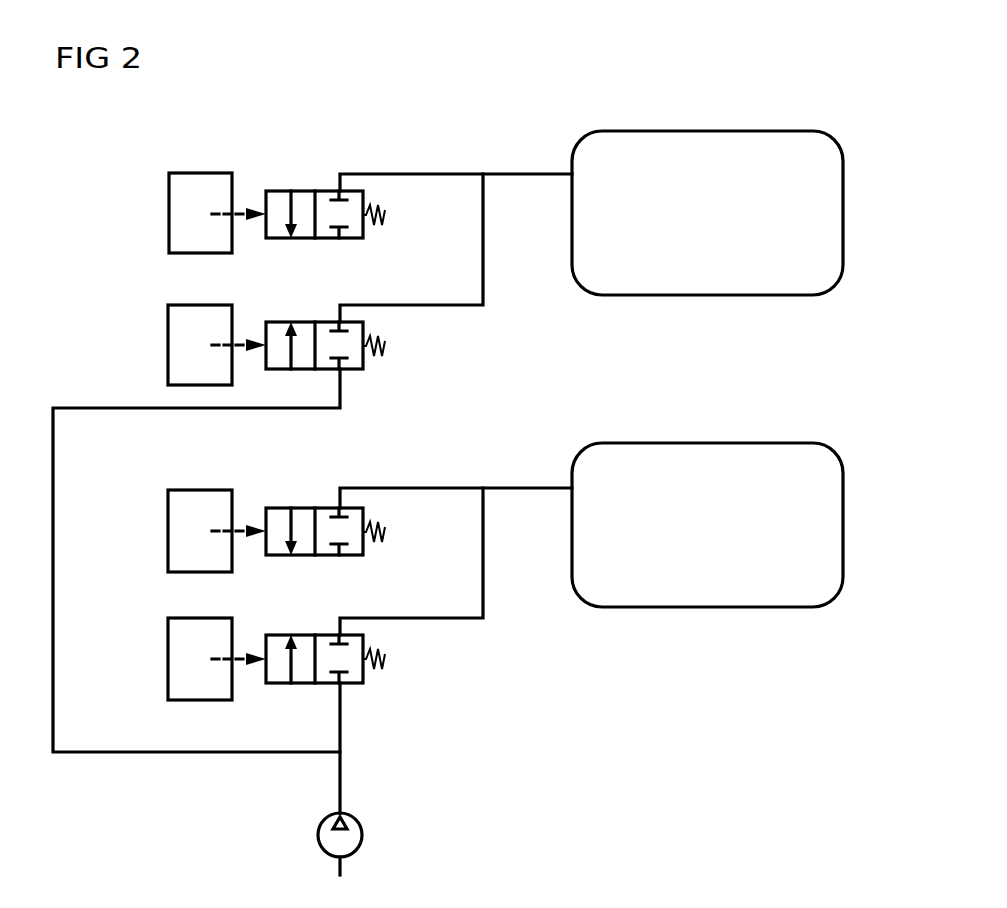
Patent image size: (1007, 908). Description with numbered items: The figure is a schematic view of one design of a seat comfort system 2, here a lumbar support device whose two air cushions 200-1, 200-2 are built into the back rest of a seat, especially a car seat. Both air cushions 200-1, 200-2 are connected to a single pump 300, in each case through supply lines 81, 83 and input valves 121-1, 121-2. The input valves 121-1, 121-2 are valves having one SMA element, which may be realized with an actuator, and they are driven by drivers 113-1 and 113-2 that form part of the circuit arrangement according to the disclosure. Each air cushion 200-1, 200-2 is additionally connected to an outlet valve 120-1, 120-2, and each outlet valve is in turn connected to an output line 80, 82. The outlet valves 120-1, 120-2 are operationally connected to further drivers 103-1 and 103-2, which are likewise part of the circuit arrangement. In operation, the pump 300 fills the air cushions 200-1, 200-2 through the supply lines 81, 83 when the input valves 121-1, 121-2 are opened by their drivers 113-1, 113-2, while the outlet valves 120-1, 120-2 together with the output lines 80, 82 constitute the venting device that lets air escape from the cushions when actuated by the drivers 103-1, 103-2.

The system 2 is at (436, 102).
The air cushion 200-1 is at (705, 131).
The air cushion 200-2 is at (705, 443).
The driver 103-1 is at (169, 214).
The driver 103-2 is at (168, 530).
The driver 113-1 is at (168, 345).
The driver 113-2 is at (168, 659).
The outlet valve 120-1 is at (302, 191).
The outlet valve 120-2 is at (302, 508).
The input valve 121-1 is at (302, 322).
The input valve 121-2 is at (302, 635).
The output line 80 is at (340, 238).
The supply line 81 is at (53, 467).
The output line 82 is at (340, 555).
The supply line 83 is at (340, 718).
The pump 300 is at (362, 835).